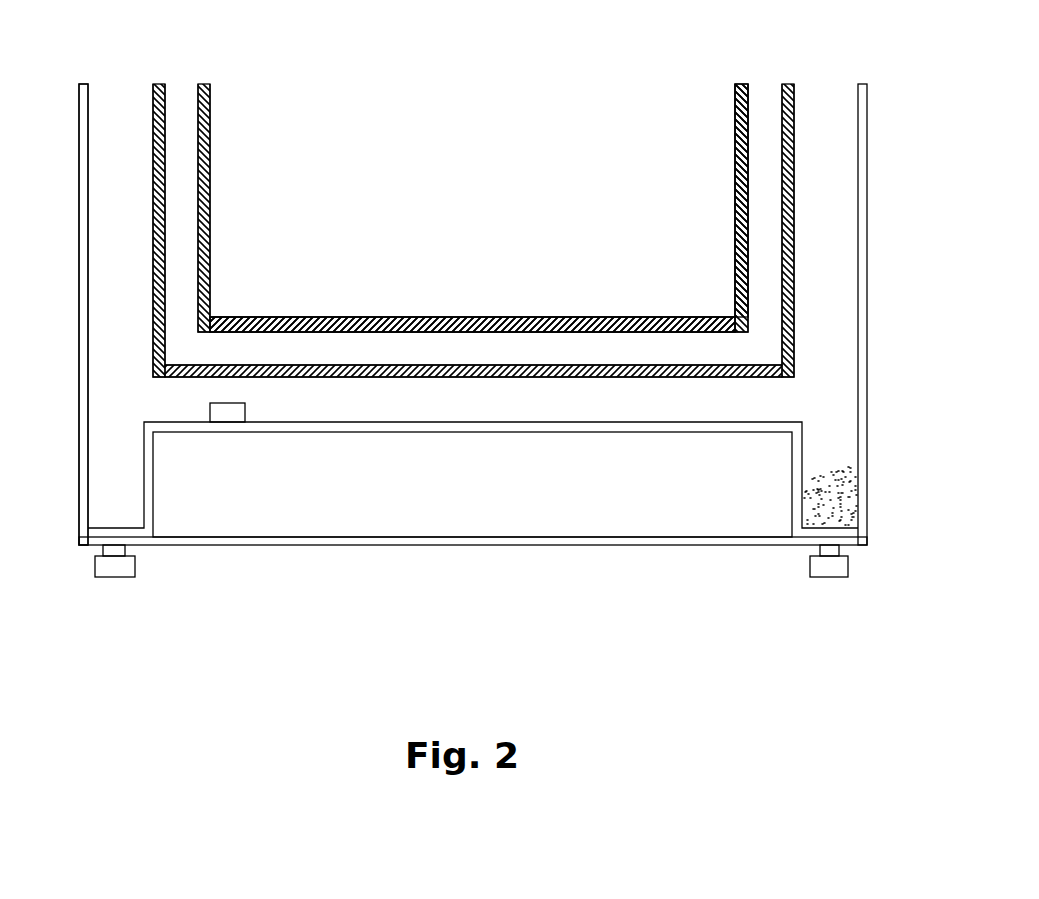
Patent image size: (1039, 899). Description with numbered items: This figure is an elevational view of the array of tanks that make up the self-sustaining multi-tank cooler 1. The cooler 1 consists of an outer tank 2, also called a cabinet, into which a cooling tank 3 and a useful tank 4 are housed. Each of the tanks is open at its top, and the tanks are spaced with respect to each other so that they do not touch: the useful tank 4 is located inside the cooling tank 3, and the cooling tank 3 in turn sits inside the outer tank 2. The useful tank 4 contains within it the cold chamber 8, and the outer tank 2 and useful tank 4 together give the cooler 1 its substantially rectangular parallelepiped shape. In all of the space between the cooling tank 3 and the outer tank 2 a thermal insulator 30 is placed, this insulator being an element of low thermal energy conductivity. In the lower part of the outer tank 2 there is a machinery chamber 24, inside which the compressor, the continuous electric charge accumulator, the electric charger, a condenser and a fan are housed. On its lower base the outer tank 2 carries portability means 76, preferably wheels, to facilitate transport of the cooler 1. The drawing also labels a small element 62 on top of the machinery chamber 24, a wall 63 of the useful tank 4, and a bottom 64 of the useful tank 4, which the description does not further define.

The self-sustaining multi-tank cooler 1 is at (72, 80).
The outer tank 2 is at (87, 208).
The cooling tank 3 is at (152, 98).
The useful tank 4 is at (213, 127).
The cold chamber 8 is at (548, 125).
The machinery chamber 24 is at (268, 487).
The thermal insulator 30 is at (832, 507).
The sensor 62 is at (220, 413).
The inner vessel side wall 63 is at (747, 117).
The inner vessel bottom 64 is at (608, 333).
The portability means 76 is at (128, 575).